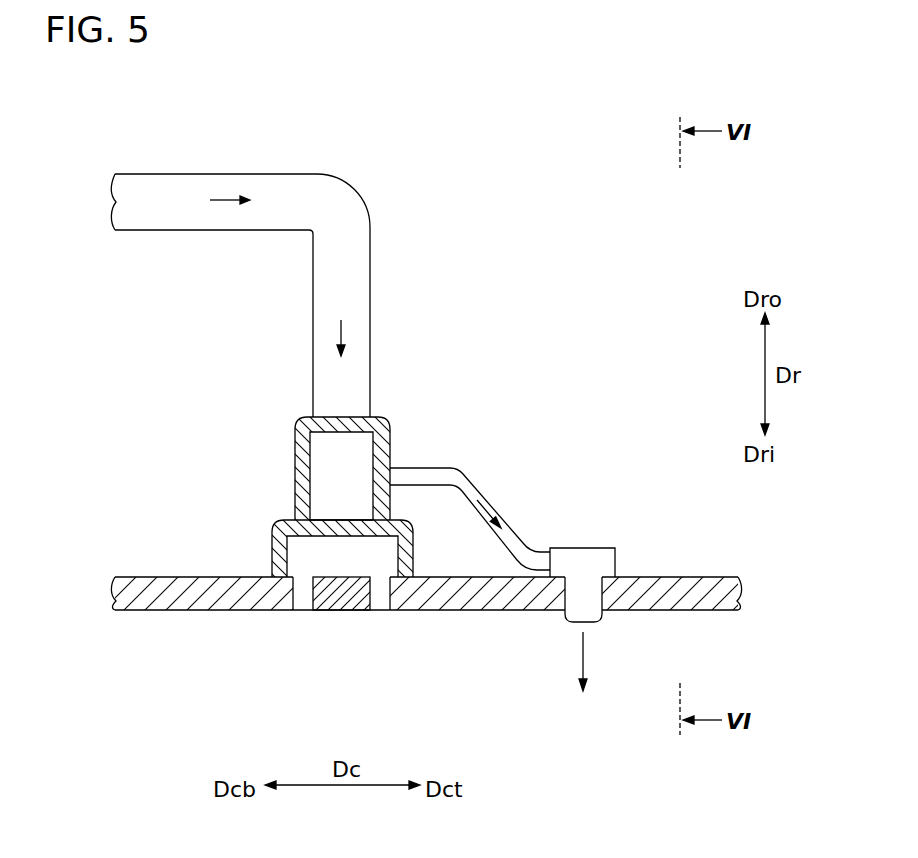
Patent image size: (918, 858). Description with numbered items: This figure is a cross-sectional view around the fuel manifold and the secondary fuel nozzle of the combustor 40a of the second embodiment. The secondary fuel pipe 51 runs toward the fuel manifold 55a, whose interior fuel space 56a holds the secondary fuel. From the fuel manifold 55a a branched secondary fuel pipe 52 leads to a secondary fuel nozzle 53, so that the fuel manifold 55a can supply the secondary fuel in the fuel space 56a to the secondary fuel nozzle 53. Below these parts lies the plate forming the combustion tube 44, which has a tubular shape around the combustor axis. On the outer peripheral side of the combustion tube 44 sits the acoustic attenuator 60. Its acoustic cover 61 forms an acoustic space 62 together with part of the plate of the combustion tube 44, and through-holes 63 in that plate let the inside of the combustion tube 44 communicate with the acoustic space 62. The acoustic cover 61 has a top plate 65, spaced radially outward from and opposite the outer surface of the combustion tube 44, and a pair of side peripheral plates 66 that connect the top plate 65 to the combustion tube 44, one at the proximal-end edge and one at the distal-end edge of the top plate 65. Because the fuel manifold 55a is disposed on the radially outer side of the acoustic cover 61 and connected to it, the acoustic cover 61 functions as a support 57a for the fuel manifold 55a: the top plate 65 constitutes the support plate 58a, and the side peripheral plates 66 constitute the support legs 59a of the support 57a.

The combustor 40a is at (528, 154).
The secondary fuel pipe 51 is at (235, 173).
The branched secondary fuel pipe 52 is at (460, 468).
The secondary fuel nozzle 53 is at (585, 548).
The combustion tube 44 is at (152, 592).
The fuel manifold 55a is at (302, 418).
The fuel space 56a is at (360, 450).
The top plate 65 is at (338, 497).
The support plate 58a is at (287, 520).
The acoustic attenuator 60 is at (262, 519).
The acoustic cover 61 is at (437, 467).
The support 57a is at (410, 522).
The acoustic space 62 is at (342, 553).
The through-hole 63 is at (306, 595).
The side peripheral plate 66 is at (361, 611).
The support leg 59a is at (264, 554).